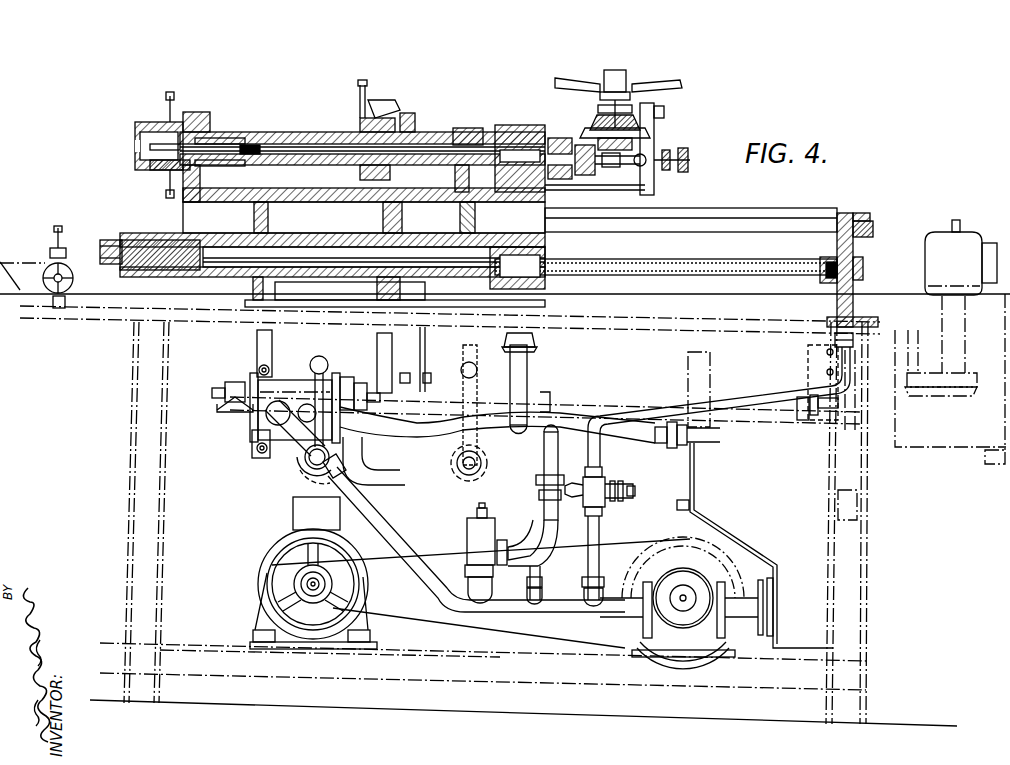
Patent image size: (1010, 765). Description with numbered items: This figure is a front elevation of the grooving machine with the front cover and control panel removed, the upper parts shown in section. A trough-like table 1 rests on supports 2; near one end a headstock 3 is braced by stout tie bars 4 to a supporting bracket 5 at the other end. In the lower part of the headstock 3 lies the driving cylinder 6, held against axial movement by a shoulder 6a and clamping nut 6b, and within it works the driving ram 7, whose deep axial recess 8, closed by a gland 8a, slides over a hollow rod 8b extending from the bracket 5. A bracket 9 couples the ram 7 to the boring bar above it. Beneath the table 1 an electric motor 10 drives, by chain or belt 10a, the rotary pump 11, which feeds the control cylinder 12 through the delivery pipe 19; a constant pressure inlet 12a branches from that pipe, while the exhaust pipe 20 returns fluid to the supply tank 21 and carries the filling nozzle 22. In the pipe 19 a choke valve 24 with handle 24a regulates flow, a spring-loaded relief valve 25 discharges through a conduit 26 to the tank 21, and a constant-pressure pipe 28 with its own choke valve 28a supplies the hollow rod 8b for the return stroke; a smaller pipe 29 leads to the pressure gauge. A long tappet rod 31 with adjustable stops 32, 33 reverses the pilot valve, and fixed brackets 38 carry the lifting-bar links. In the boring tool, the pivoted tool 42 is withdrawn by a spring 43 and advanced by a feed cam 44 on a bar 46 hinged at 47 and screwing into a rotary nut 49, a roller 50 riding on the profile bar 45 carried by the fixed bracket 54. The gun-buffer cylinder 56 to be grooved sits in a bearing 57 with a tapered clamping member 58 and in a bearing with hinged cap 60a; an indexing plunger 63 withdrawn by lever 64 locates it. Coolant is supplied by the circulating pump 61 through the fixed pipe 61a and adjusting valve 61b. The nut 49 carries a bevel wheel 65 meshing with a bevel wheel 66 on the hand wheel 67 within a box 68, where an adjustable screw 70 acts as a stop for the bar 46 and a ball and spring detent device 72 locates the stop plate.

The table 1 is at (108, 300).
The supports 2 is at (128, 526).
The headstock 3 is at (312, 212).
The tie bars 4 is at (790, 226).
The supporting bracket 5 is at (860, 240).
The driving cylinder 6 is at (300, 290).
The shoulder 6a is at (460, 212).
The clamping nut 6b is at (253, 285).
The driving ram 7 is at (165, 260).
The axial recess 8 is at (353, 262).
The gland 8a is at (548, 280).
The hollow rod 8b is at (712, 256).
The bracket 9 is at (548, 244).
The electric motor 10 is at (272, 551).
The chain or belt 10a is at (400, 565).
The rotary pump 11 is at (700, 580).
The control cylinder 12 is at (250, 425).
The constant pressure inlet 12a is at (217, 410).
The delivery pipe 19 is at (362, 502).
The exhaust pipe 20 is at (448, 437).
The supply tank 21 is at (728, 491).
The filling nozzle 22 is at (532, 370).
The choke valve 24 is at (310, 464).
The handle 24a is at (327, 362).
The relief valve 25 is at (475, 530).
The conduit 26 is at (544, 535).
The constant-pressure pipe 28 is at (758, 395).
The choke valve 28a is at (598, 482).
The smaller pipe 29 is at (541, 560).
The tappet rod 31 is at (590, 403).
The adjustable stop 32 is at (550, 402).
The adjustable stop 33 is at (800, 400).
The fixed brackets 38 is at (438, 348).
The tool 42 is at (220, 152).
The spring 43 is at (235, 165).
The feed cam 44 is at (162, 176).
The profile bar 45 is at (252, 147).
The bar 46 is at (648, 168).
The hinge 47 is at (452, 168).
The rotary nut 49 is at (575, 172).
The roller 50 is at (150, 156).
The fixed bracket 54 is at (468, 128).
The gun-buffer cylinder 56 is at (288, 132).
The bearing 57 is at (410, 138).
The tapered clamping member 58 is at (408, 118).
The hinged cap 60a is at (203, 106).
The circulating pump 61 is at (950, 342).
The fixed pipe 61a is at (680, 318).
The adjusting valve 61b is at (50, 262).
The indexing plunger 63 is at (368, 98).
The lever 64 is at (392, 108).
The bevel wheel 65 is at (593, 172).
The bevel wheel 66 is at (618, 168).
The hand wheel 67 is at (662, 84).
The box 68 is at (655, 125).
The adjustable screw 70 is at (690, 160).
The ball and spring detent device 72 is at (650, 192).